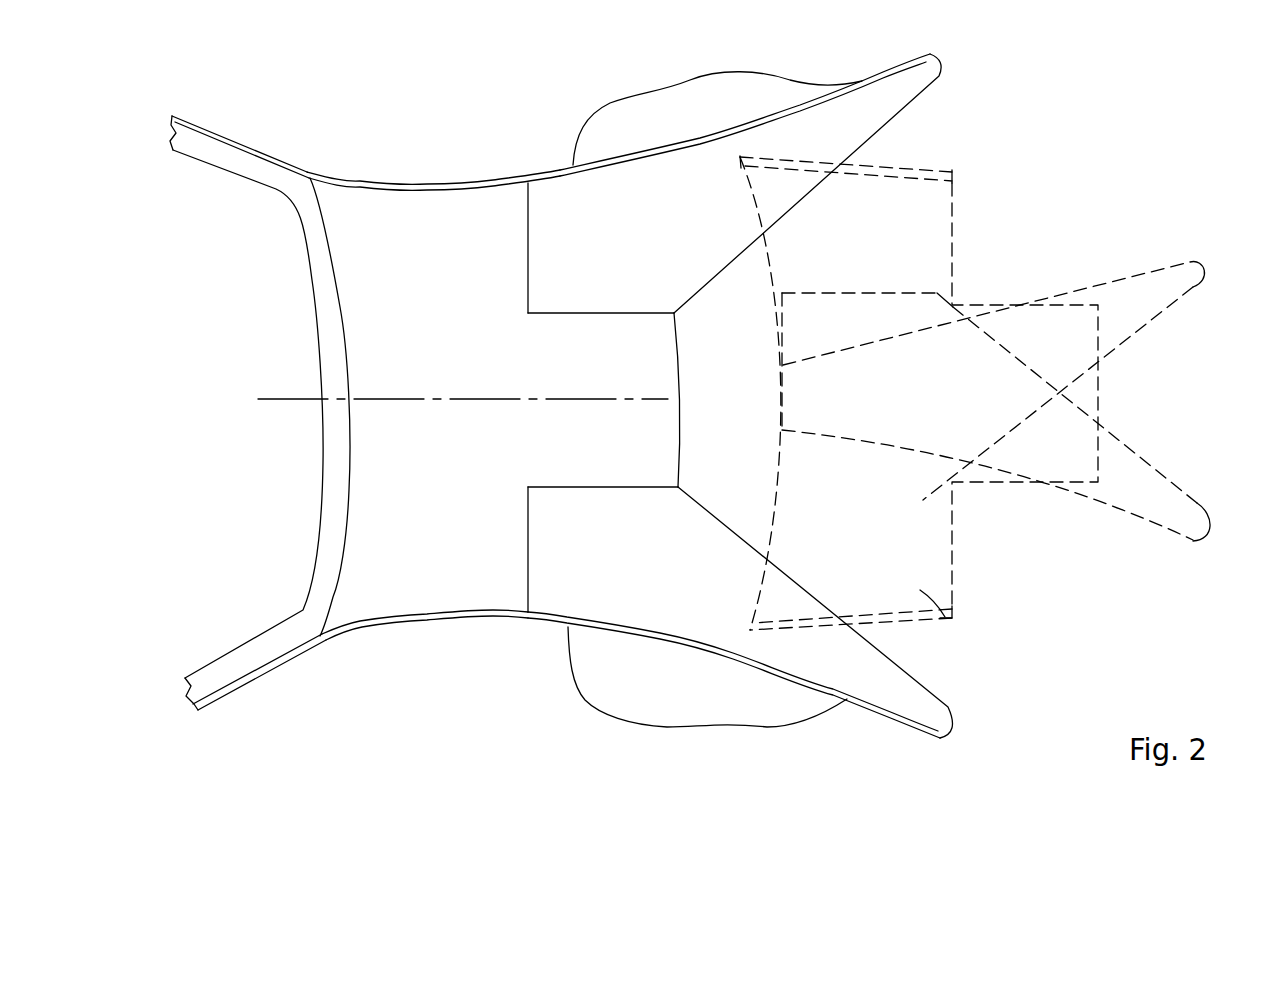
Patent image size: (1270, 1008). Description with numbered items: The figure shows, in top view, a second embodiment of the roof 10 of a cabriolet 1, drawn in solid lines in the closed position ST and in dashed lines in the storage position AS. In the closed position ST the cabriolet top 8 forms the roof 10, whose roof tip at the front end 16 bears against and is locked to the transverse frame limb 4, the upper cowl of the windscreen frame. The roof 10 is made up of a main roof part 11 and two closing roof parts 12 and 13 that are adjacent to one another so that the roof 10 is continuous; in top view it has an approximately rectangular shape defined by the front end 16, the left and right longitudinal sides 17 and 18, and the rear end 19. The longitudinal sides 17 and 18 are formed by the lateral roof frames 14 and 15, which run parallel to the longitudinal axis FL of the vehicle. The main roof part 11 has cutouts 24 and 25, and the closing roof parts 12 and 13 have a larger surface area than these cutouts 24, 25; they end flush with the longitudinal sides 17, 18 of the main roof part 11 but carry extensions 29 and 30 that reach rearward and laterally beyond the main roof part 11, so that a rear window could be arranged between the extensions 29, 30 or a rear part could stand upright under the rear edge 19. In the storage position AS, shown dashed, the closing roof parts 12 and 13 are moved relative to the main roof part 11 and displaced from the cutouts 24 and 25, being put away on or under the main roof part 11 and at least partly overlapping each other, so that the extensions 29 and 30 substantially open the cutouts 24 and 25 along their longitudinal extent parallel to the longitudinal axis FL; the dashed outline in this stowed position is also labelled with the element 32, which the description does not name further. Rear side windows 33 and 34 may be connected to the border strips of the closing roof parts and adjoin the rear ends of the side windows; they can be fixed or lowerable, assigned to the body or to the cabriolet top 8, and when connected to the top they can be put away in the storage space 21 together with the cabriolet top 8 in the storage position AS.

The cabriolet 1 is at (524, 112).
The closed position ST is at (573, 118).
The storage position AS is at (1058, 164).
The longitudinal axis FL is at (430, 398).
The transverse frame limb 4 is at (330, 468).
The cabriolet top 8 is at (477, 641).
The roof 10 is at (470, 186).
The main roof part 11 is at (374, 200).
The closing roof part 12 is at (549, 295).
The closing roof part 13 is at (541, 508).
The lateral roof frame 14 is at (660, 636).
The lateral roof frame 15 is at (603, 166).
The front end 16 is at (342, 330).
The longitudinal side 17 is at (425, 613).
The longitudinal side 18 is at (503, 183).
The rear end 19 is at (680, 391).
The storage space 21 is at (1101, 229).
The cutout 24 is at (611, 486).
The cutout 25 is at (598, 314).
The extension 29 is at (712, 163).
The extension 30 is at (888, 692).
The receiving frame 32 is at (953, 266).
The rear side window 33 is at (667, 710).
The rear side window 34 is at (690, 102).